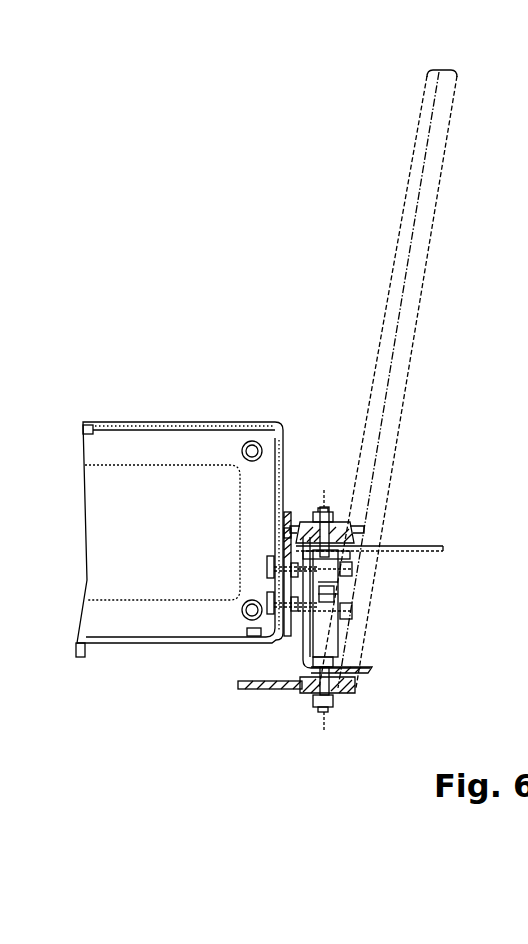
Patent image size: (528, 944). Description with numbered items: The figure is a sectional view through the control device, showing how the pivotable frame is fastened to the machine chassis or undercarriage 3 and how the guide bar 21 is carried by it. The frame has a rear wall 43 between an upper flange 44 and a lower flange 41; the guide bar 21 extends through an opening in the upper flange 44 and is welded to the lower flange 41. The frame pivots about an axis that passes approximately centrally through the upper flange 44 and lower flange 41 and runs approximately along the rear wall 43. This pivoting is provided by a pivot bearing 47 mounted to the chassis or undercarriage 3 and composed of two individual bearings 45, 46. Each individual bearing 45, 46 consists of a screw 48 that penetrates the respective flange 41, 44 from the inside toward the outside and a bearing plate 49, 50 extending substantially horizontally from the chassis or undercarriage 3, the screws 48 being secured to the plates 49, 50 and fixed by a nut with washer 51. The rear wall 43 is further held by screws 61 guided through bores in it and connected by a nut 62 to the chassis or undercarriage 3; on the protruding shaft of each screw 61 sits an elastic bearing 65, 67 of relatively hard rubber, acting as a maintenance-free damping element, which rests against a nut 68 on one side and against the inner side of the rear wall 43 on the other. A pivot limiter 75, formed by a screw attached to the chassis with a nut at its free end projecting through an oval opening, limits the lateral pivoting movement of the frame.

The guide bar 21 is at (431, 205).
The machine chassis or undercarriage 3 is at (263, 410).
The individual bearing 45 is at (287, 517).
The bearing plate 49 is at (286, 533).
The nut 62 is at (283, 563).
The screw 61 is at (270, 604).
The rear wall 43 is at (303, 634).
The lower flange 41 is at (371, 669).
The elastic bearing 65 is at (318, 581).
The nut 68 is at (348, 572).
The pivot limiter 75 is at (327, 600).
The elastic bearing 67 is at (325, 620).
The upper flange 44 is at (408, 549).
The screw 48 is at (335, 522).
The nut with washer 51 is at (333, 511).
The bearing plate 50 is at (254, 688).
The pivot bearing 47 is at (270, 657).
The individual bearing 46 is at (354, 708).